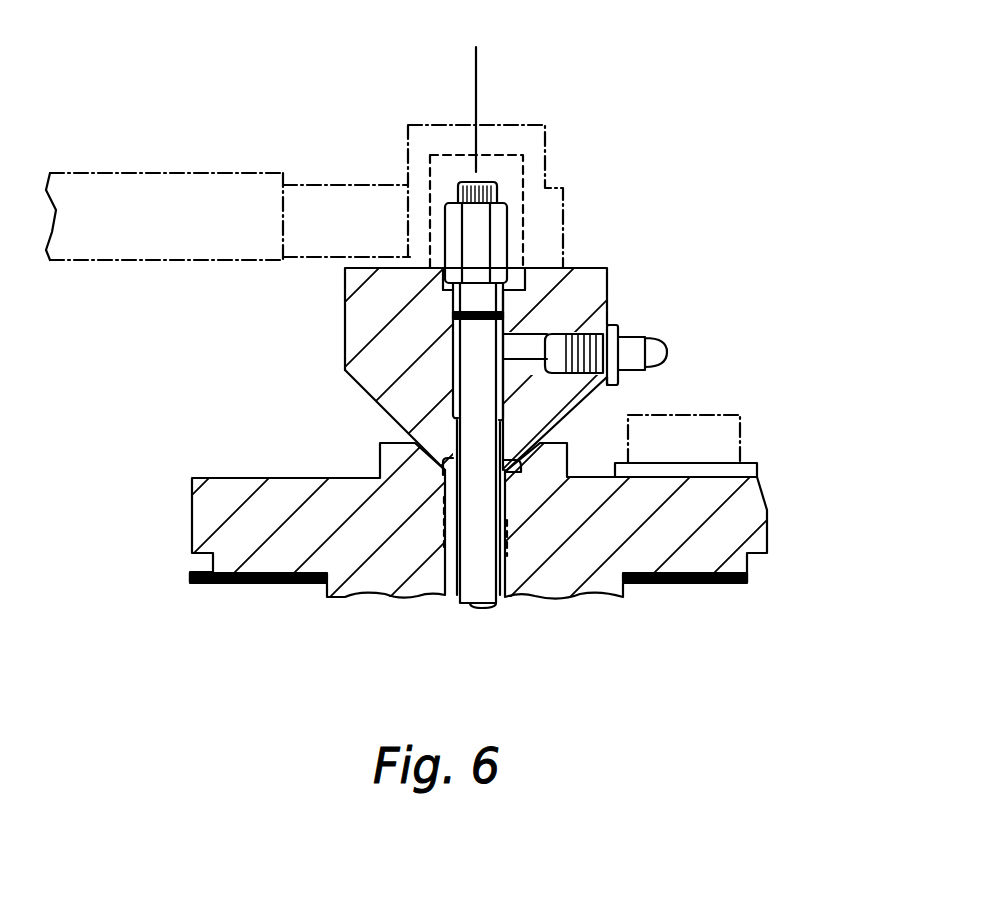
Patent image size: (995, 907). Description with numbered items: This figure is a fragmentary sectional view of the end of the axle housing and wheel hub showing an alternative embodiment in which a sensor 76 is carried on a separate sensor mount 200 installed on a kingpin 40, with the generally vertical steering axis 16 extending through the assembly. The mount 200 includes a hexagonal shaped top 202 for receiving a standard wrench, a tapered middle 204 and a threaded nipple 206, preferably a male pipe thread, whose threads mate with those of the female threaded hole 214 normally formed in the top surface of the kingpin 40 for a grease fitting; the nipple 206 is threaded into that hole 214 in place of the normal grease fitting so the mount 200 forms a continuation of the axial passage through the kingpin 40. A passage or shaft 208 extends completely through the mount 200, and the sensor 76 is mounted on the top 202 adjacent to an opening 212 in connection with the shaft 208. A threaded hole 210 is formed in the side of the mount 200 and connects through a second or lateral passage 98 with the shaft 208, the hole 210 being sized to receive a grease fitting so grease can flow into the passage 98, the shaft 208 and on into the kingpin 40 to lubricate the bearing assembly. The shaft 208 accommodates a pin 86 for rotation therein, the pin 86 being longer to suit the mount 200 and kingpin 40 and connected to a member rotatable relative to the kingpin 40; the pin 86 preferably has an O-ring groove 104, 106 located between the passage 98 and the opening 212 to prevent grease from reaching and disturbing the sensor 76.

The steering axis 16 is at (476, 65).
The sensor 76 is at (548, 147).
The O-ring groove 104 is at (453, 317).
The washer 106 is at (478, 315).
The opening 212 is at (520, 268).
The lateral passage 98 is at (528, 343).
The sensor mount 200 is at (607, 298).
The threaded hole 210 is at (637, 340).
The hexagonal shaped top 202 is at (345, 292).
The shaft 208 is at (497, 400).
The tapered middle 204 is at (368, 396).
The threaded hole 214 is at (432, 492).
The threaded nipple 206 is at (443, 543).
The pin 86 is at (497, 605).
The kingpin 40 is at (756, 494).